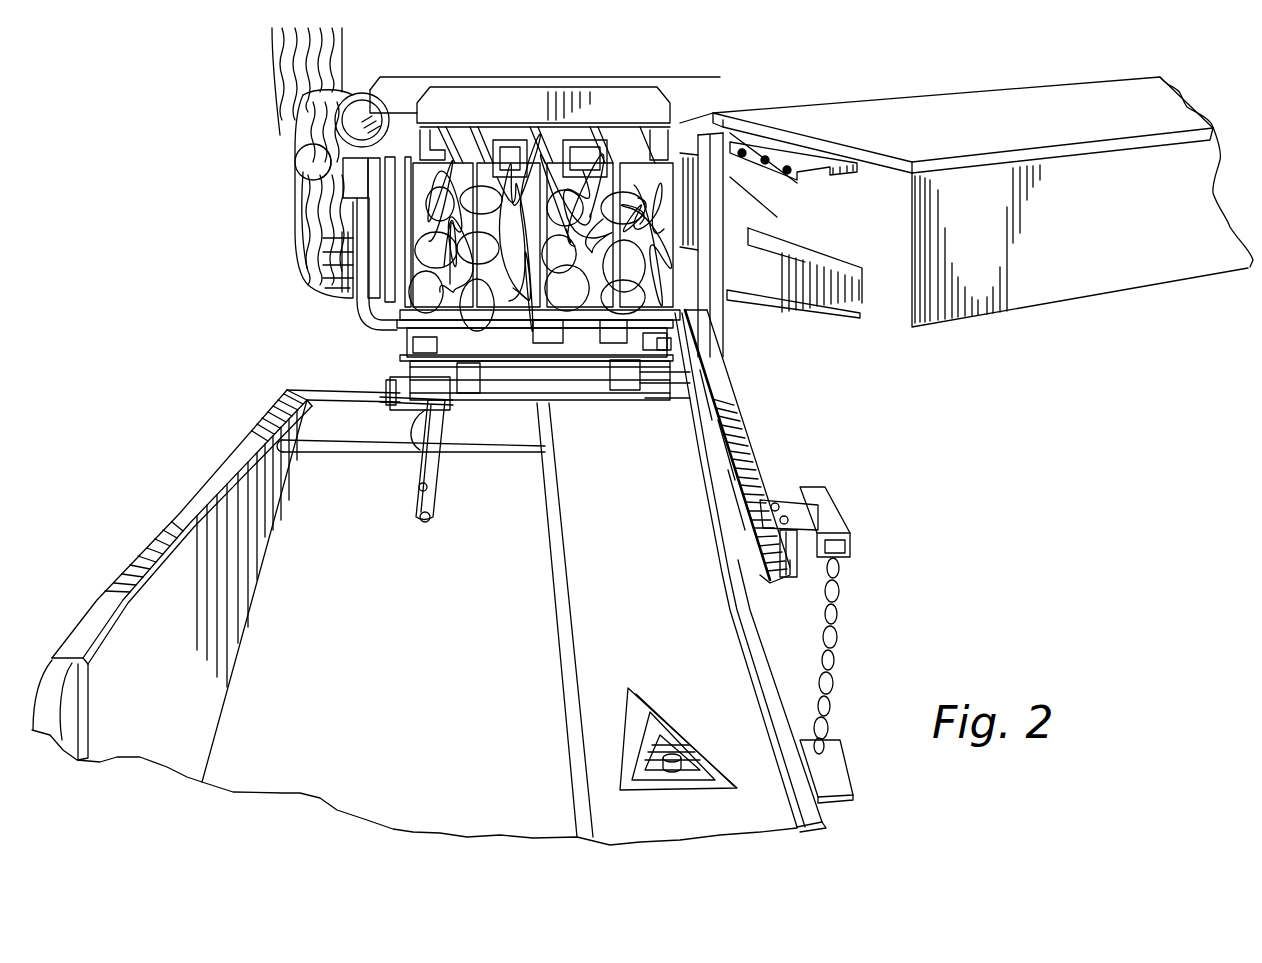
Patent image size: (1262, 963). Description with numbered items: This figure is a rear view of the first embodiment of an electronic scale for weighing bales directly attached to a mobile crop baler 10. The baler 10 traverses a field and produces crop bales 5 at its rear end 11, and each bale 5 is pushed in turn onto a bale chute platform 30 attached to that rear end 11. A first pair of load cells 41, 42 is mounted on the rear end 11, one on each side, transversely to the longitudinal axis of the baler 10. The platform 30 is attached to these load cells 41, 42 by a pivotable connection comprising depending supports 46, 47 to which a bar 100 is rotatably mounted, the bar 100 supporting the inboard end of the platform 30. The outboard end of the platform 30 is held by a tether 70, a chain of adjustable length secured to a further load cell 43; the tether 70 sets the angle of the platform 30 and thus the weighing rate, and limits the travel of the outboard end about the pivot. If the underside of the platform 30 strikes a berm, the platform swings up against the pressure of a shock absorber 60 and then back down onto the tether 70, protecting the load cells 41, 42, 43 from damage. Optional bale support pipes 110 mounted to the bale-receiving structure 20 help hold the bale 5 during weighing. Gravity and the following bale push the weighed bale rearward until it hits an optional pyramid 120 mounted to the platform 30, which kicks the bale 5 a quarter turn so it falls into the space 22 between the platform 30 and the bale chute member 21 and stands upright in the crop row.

The mobile crop baler 10 is at (655, 58).
The rear end of the baler 11 is at (653, 100).
The crop bale 5 is at (420, 235).
The load cell 42 is at (360, 340).
The load cell 41 is at (690, 340).
The shock absorber 60 is at (745, 420).
The bar 100 is at (570, 370).
The depending support 46 is at (470, 395).
The depending support 47 is at (630, 395).
The bale support pipe 110 is at (423, 467).
The load cell 43 is at (825, 505).
The tether 70 is at (838, 623).
The pyramid 120 is at (640, 730).
The space 22 is at (405, 698).
The bale chute platform 30 is at (638, 817).
The bale-receiving structure 20 is at (195, 460).
The bale chute member 21 is at (155, 505).